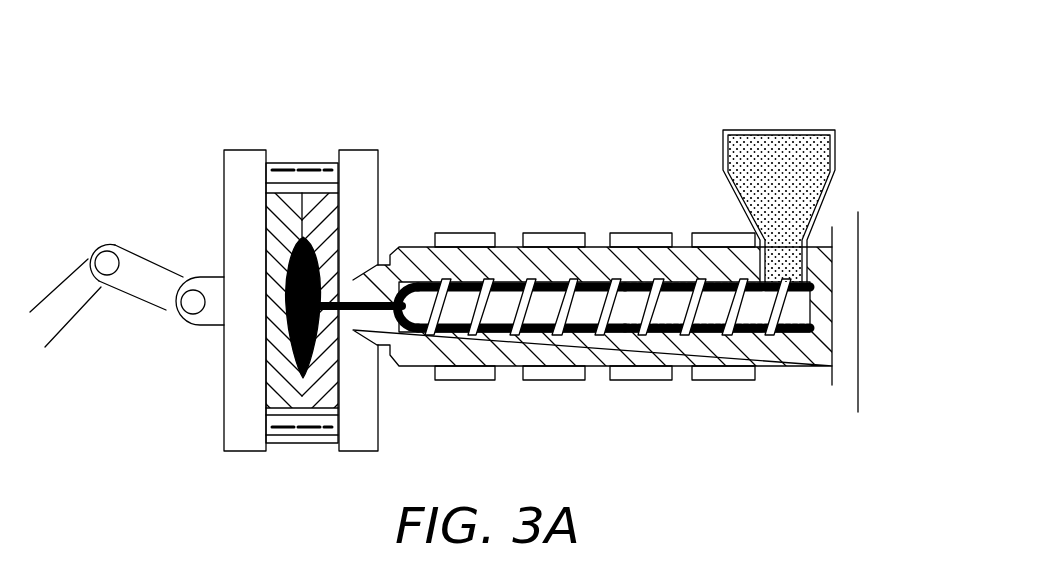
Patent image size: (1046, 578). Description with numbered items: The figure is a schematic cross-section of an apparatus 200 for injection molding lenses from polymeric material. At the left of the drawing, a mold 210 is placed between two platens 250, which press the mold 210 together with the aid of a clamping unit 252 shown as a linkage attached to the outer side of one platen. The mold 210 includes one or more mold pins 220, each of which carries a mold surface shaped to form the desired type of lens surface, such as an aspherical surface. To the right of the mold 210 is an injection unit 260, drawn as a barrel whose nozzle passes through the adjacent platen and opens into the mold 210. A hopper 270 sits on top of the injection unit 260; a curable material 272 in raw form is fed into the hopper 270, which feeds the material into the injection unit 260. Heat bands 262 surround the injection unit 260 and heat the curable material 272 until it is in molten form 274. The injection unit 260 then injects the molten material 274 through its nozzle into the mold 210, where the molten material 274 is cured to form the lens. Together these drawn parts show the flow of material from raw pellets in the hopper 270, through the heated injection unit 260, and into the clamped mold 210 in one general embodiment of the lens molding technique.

The apparatus for injection molding lenses 200 is at (635, 223).
The mold 210 is at (362, 287).
The mold pin 220 is at (284, 402).
The platens 250 is at (241, 152).
The clamping unit 252 is at (75, 318).
The injection unit 260 is at (635, 280).
The heat bands 262 is at (715, 412).
The hopper 270 is at (819, 170).
The curable material 272 is at (812, 174).
The molten material 274 is at (428, 283).